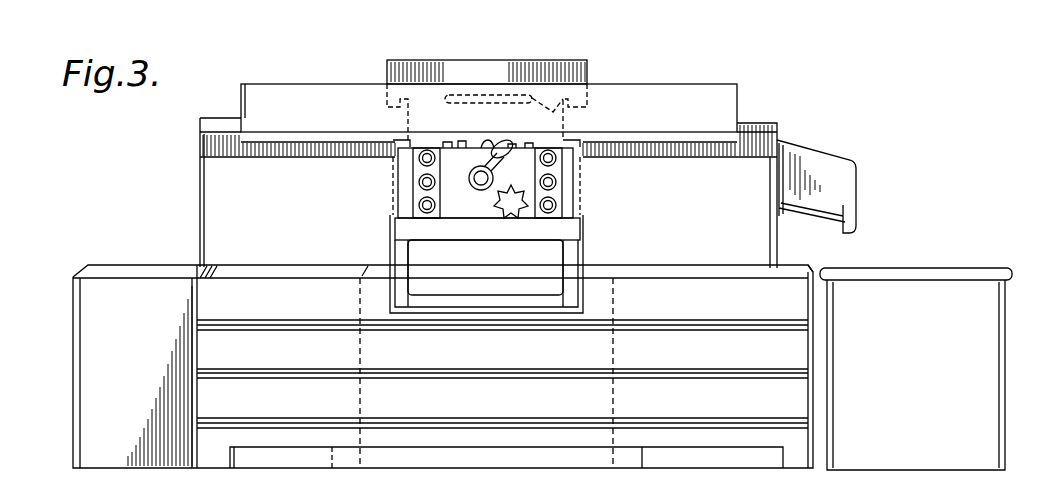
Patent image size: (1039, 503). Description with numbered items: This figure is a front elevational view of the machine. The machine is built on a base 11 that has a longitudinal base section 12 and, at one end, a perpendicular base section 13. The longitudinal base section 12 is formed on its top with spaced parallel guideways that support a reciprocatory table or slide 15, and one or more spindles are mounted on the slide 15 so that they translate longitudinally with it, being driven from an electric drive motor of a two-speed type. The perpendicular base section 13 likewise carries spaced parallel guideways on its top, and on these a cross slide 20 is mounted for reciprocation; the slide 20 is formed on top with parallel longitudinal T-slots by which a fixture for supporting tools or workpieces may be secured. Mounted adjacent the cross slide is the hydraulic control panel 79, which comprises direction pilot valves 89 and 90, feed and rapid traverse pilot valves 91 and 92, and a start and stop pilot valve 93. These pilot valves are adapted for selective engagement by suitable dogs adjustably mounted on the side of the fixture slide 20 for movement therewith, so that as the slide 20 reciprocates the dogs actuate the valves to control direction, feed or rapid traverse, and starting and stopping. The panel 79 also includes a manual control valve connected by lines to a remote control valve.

The base 11 is at (448, 480).
The longitudinal base section 12 is at (360, 349).
The perpendicular base section 13 is at (788, 283).
The reciprocatory table or slide 15 is at (588, 75).
The cross slide 20 is at (738, 108).
The hydraulic control panel 79 is at (527, 190).
The direction pilot valve 89 is at (448, 141).
The direction pilot valve 90 is at (529, 141).
The feed and rapid traverse pilot valve 91 is at (463, 140).
The feed and rapid traverse pilot valve 92 is at (511, 139).
The start and stop pilot valve 93 is at (488, 139).